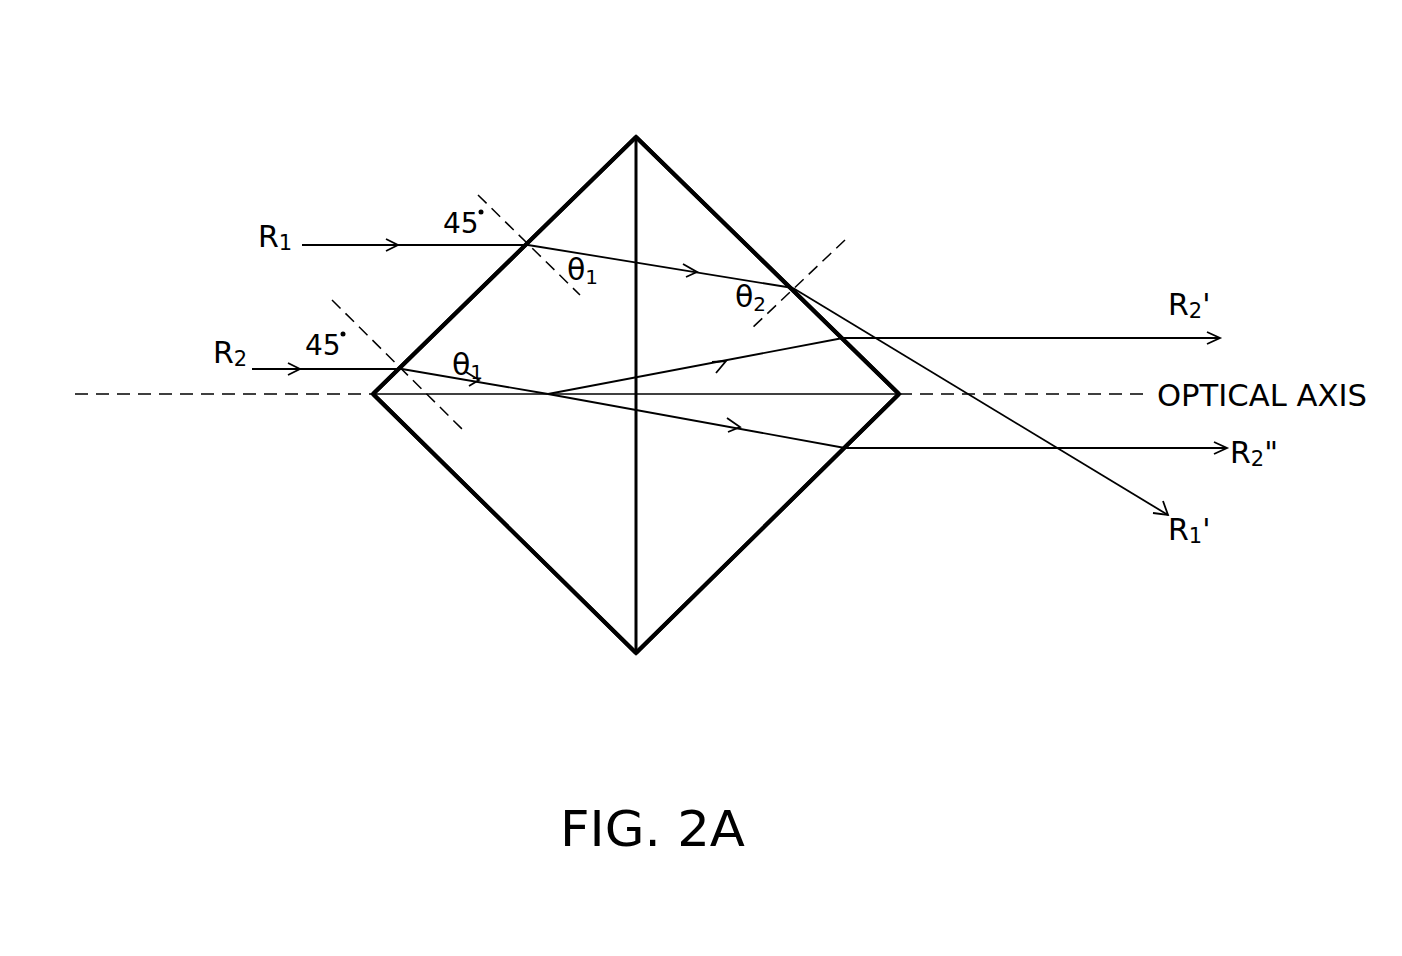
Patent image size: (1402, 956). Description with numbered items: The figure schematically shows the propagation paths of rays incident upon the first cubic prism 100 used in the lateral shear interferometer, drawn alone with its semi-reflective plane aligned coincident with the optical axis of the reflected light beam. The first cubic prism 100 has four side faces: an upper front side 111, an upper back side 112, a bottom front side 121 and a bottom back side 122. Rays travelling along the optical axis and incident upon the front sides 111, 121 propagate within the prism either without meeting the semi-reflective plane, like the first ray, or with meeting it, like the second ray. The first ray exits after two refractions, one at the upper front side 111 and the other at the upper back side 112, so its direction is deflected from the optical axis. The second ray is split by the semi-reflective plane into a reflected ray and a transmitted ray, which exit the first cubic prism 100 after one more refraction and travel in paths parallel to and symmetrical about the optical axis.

The first cubic prism 100 is at (650, 107).
The upper front side 111 is at (613, 155).
The upper back side 112 is at (665, 158).
The bottom front side 121 is at (605, 628).
The bottom back side 122 is at (668, 625).